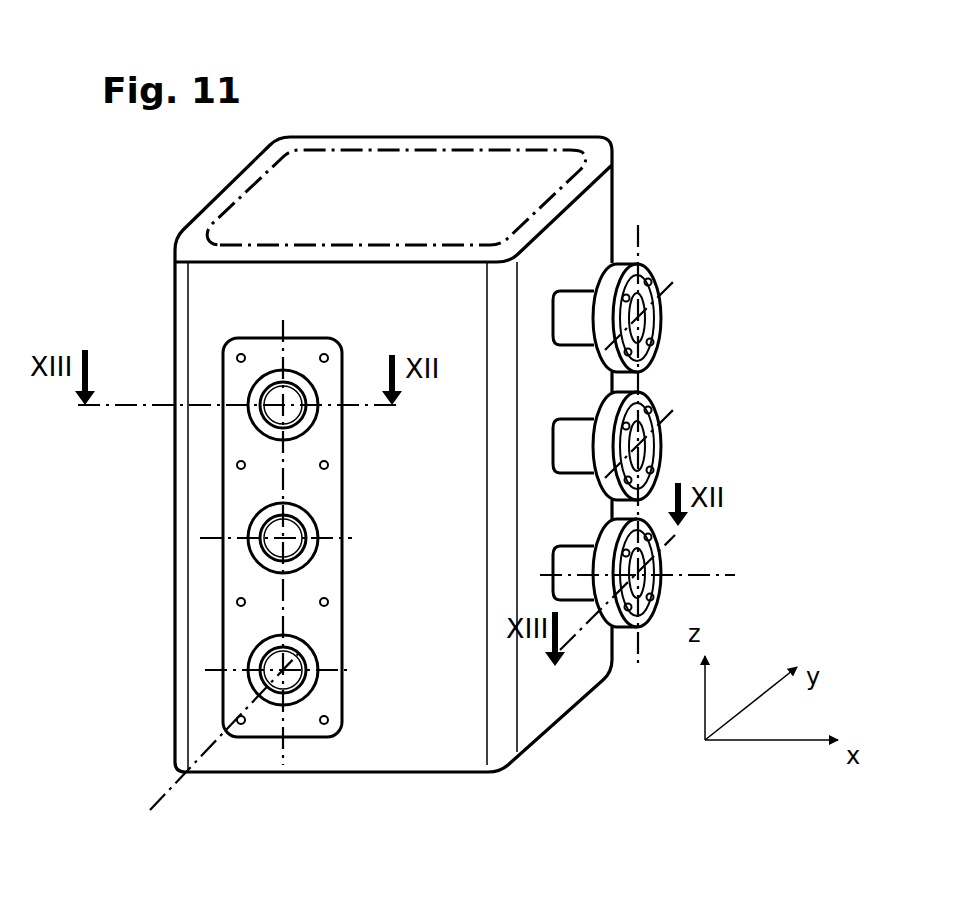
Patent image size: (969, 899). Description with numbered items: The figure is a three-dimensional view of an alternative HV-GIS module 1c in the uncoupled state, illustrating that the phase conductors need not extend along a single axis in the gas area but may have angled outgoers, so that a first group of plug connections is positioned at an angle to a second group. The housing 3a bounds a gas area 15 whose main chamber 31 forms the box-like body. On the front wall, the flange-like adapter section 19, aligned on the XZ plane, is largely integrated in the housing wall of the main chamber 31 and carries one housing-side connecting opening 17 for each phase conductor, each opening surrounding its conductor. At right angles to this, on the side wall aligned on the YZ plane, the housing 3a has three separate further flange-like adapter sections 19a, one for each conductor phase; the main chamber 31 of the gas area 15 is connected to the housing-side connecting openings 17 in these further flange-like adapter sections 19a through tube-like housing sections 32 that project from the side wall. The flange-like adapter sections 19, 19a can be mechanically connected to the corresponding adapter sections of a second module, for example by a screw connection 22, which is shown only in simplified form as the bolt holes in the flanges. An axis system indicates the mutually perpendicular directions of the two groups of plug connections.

The HV-GIS module 1c is at (770, 96).
The housing 3a is at (323, 132).
The main chamber 31 is at (400, 198).
The gas area 15 is at (458, 226).
The screw connection 22 is at (655, 275).
The flange-like adapter section 19 is at (238, 496).
The further flange-like adapter section 19a is at (666, 313).
The housing-side connecting opening 17 is at (660, 325).
The tube-like housing section 32 is at (565, 340).